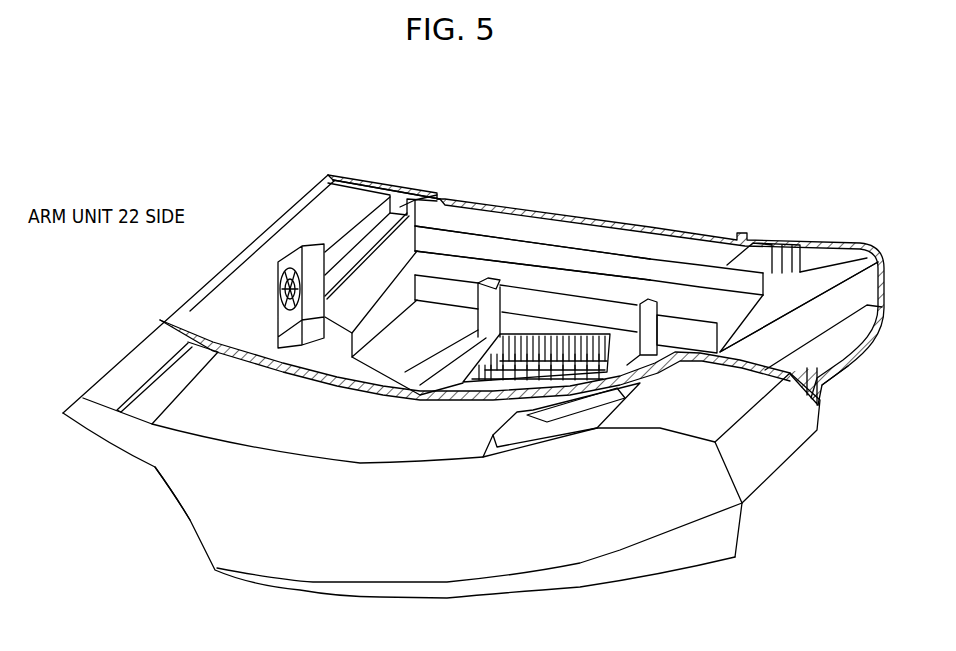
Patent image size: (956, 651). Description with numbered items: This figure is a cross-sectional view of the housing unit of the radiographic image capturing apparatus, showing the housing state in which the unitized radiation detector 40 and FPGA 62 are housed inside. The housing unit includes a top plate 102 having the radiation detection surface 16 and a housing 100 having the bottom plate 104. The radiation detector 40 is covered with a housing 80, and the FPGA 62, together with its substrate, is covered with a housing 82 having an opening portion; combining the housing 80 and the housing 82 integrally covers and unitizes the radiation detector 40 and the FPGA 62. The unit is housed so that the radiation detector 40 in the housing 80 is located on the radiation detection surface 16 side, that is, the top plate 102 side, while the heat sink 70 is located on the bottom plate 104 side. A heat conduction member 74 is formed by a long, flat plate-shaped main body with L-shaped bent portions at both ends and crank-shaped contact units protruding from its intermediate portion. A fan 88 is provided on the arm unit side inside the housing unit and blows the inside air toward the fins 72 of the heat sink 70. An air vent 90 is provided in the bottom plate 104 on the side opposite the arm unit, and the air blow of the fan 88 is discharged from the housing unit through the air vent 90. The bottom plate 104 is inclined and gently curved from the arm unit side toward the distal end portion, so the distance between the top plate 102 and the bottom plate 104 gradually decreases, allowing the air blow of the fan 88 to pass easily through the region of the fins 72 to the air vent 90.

The radiation detection surface 16 is at (472, 196).
The radiation detector 40 is at (693, 318).
The FPGA 62 is at (520, 250).
The heat sink 70 is at (560, 332).
The fins 72 is at (592, 342).
The heat conduction member 74 is at (646, 302).
The housing 80 is at (538, 257).
The housing 82 is at (670, 323).
The fan 88 is at (292, 256).
The air vent 90 is at (578, 437).
The housing 100 is at (875, 347).
The top plate 102 is at (362, 177).
The bottom plate 104 is at (242, 413).